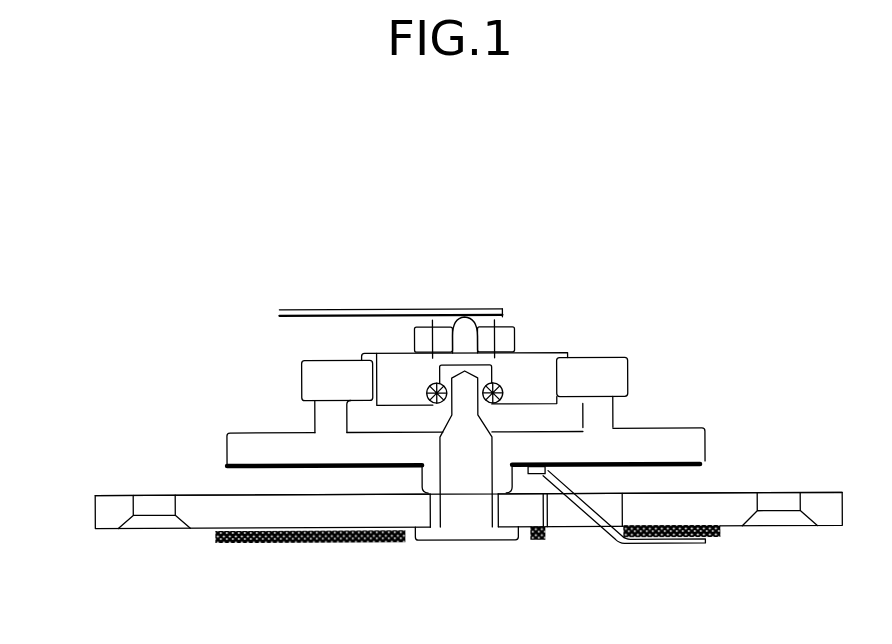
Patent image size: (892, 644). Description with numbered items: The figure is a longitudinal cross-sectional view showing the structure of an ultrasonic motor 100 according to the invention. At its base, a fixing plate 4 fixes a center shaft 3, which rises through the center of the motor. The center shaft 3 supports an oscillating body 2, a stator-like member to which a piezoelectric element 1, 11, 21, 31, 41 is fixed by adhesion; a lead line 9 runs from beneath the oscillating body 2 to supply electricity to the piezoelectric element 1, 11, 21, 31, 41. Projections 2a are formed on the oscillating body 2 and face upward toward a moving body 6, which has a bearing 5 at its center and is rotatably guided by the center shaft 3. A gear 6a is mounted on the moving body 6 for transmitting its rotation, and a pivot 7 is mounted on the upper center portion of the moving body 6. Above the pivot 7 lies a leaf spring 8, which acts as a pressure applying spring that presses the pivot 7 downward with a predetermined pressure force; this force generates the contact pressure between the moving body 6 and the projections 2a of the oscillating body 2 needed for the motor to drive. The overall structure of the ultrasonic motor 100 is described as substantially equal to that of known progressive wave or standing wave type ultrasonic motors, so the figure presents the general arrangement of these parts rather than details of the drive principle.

The ultrasonic motor 100 is at (672, 275).
The leaf spring 8 is at (420, 308).
The pivot 7 is at (472, 325).
The gear 6a is at (510, 335).
The moving body 6 is at (613, 378).
The bearing 5 is at (503, 388).
The projections 2a is at (320, 412).
The oscillating body 2 is at (273, 437).
The piezoelectric element 1 is at (358, 463).
The piezoelectric element 11 is at (358, 463).
The piezoelectric element 21 is at (358, 463).
The piezoelectric element 31 is at (358, 463).
The piezoelectric element 41 is at (230, 465).
The center shaft 3 is at (462, 540).
The fixing plate 4 is at (190, 528).
The lead line 9 is at (697, 545).